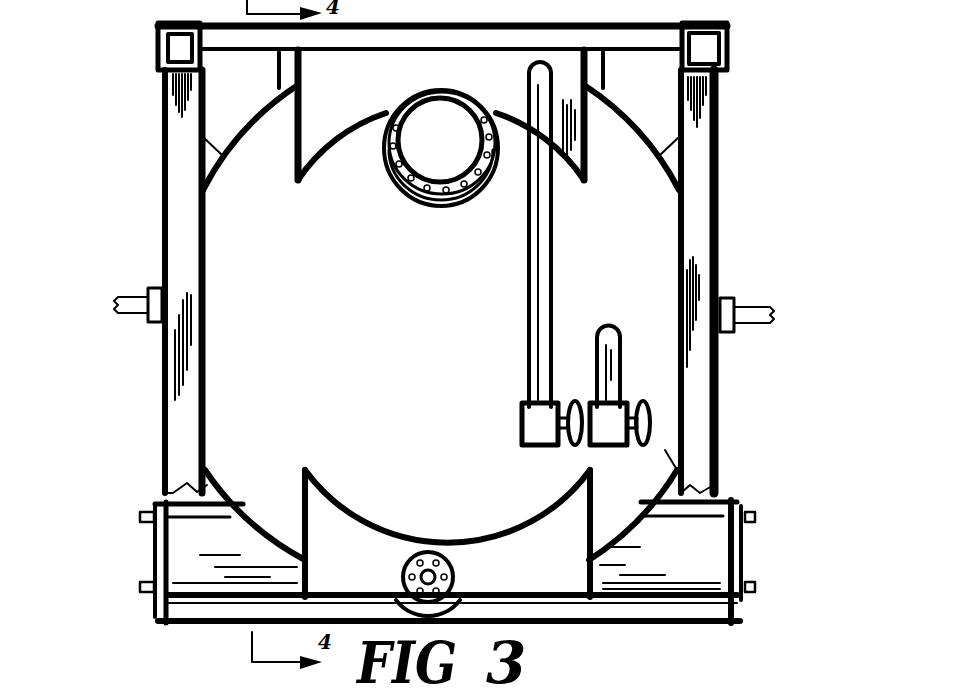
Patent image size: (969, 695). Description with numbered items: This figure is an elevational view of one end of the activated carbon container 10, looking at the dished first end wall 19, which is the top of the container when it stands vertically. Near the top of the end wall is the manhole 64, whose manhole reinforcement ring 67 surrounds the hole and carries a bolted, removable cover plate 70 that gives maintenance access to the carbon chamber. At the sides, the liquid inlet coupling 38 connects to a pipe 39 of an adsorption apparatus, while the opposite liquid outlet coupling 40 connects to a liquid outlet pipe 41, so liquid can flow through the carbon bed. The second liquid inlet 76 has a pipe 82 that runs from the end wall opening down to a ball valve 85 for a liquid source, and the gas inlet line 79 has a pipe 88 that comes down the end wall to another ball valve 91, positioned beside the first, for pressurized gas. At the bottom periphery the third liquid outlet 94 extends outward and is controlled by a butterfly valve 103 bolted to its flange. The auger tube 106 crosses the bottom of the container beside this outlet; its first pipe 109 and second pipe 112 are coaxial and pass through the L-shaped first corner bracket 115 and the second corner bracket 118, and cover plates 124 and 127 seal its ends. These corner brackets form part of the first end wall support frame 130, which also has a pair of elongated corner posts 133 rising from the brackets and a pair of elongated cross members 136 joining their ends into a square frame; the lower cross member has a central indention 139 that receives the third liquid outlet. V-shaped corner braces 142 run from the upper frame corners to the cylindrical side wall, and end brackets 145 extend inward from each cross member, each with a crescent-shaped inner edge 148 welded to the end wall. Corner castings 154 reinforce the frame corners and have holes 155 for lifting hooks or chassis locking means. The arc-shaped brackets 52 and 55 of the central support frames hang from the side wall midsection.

The container 10 is at (832, 76).
The first end wall 19 is at (304, 339).
The liquid inlet coupling 38 is at (735, 332).
The pipe 39 is at (756, 305).
The liquid outlet coupling 40 is at (157, 323).
The liquid outlet pipe 41 is at (132, 298).
The arc-shaped bracket 52 is at (167, 493).
The arc-shaped bracket 55 is at (705, 495).
The manhole 64 is at (485, 216).
The manhole reinforcement ring 67 is at (412, 207).
The cover plate 70 is at (455, 147).
The second liquid inlet 76 is at (613, 304).
The gas inlet line 79 is at (517, 358).
The pipe 82 is at (618, 363).
The ball valve 85 is at (600, 447).
The pipe 88 is at (553, 258).
The ball valve 91 is at (533, 447).
The third liquid outlet 94 is at (445, 535).
The butterfly valve 103 is at (457, 580).
The auger tube 106 is at (257, 537).
The first pipe 109 is at (218, 572).
The second pipe 112 is at (687, 562).
The first corner bracket 115 is at (218, 490).
The second corner bracket 118 is at (665, 450).
The cover plate 124 is at (150, 548).
The cover plate 127 is at (743, 547).
The first end wall support frame 130 is at (156, 212).
The elongated corner posts 133 is at (163, 242).
The elongated cross members 136 is at (392, 58).
The indention 139 is at (397, 598).
The V-shaped corner braces 142 is at (222, 20).
The end brackets 145 is at (510, 89).
The crescent-shaped inner edge 148 is at (347, 197).
The corner castings 154 is at (158, 50).
The holes 155 is at (157, 30).